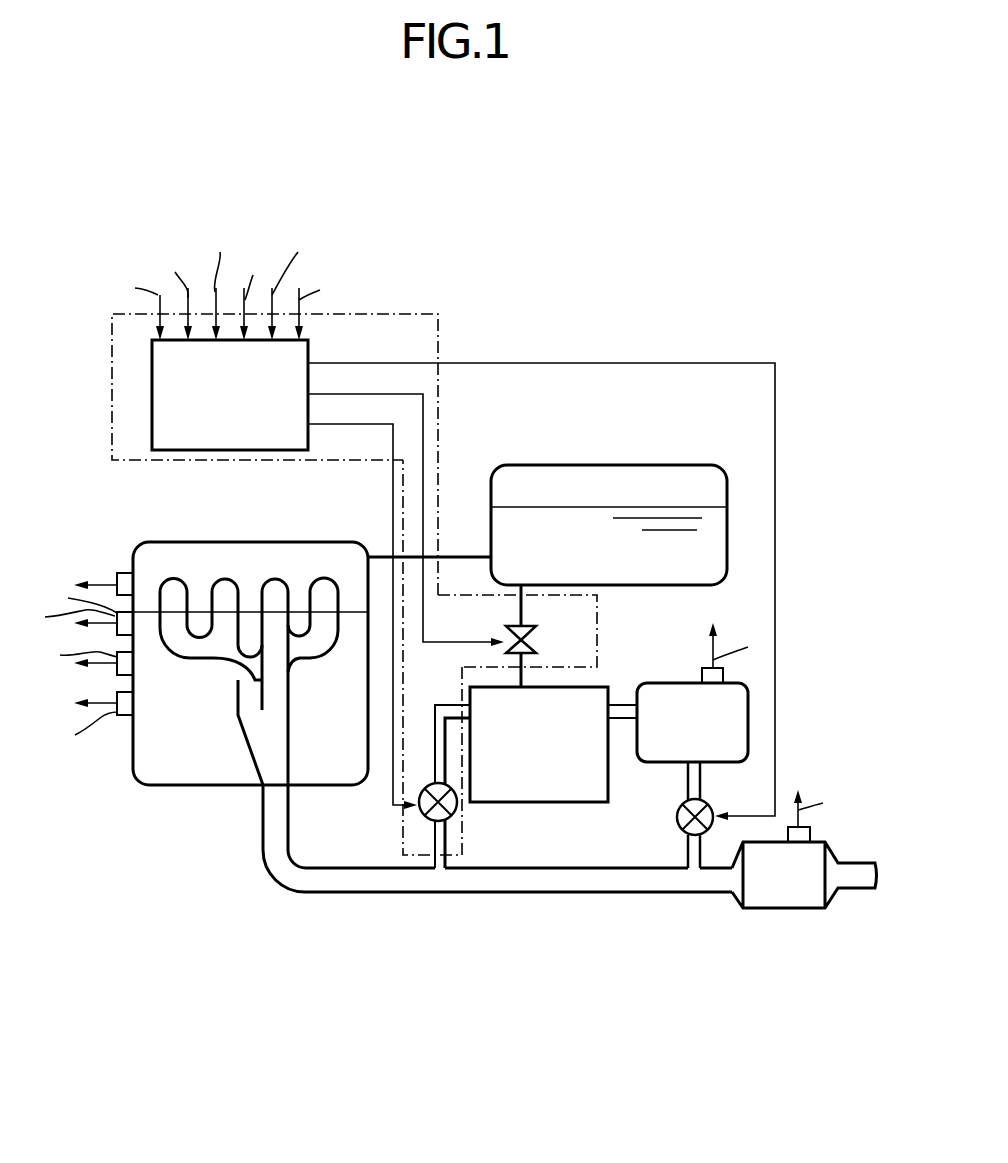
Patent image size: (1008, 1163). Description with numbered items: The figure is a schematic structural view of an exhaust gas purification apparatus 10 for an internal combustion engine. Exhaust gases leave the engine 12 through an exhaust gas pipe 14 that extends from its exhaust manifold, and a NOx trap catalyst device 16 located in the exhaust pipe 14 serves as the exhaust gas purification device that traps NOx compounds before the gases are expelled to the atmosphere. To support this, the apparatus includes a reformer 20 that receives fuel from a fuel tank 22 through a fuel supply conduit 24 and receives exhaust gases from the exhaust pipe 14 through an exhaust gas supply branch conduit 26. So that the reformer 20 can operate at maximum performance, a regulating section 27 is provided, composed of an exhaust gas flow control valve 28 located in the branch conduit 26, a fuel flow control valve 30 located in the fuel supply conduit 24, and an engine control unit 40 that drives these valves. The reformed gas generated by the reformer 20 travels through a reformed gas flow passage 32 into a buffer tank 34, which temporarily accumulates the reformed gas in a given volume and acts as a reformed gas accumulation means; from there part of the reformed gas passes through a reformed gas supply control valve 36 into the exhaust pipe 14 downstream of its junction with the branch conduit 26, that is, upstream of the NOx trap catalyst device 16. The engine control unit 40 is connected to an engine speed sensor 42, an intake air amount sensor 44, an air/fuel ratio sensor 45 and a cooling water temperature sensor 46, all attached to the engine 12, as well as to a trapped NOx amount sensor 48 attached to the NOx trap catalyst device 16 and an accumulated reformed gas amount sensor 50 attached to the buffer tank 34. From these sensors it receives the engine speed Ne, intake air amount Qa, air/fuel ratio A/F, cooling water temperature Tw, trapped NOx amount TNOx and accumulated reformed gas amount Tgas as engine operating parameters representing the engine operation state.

The exhaust gas purification apparatus 10 is at (597, 308).
The engine 12 is at (250, 536).
The exhaust gas pipe 14 is at (382, 893).
The NOx trap catalyst device 16 is at (773, 908).
The reformer 20 is at (468, 702).
The fuel tank 22 is at (582, 465).
The fuel supply conduit 24 is at (518, 610).
The exhaust gas supply branch conduit 26 is at (433, 833).
The regulating section 27 is at (449, 326).
The exhaust gas flow control valve 28 is at (458, 812).
The fuel flow control valve 30 is at (528, 646).
The reformed gas flow passage 32 is at (618, 700).
The buffer tank 34 is at (667, 685).
The reformed gas supply control valve 36 is at (680, 827).
The engine control unit 40 is at (314, 352).
The engine speed sensor 42 is at (123, 572).
The intake air amount sensor 44 is at (117, 577).
The air/fuel ratio sensor 45 is at (117, 672).
The cooling water temperature sensor 46 is at (125, 716).
The trapped NOx amount sensor 48 is at (810, 833).
The accumulated reformed gas amount sensor 50 is at (723, 675).